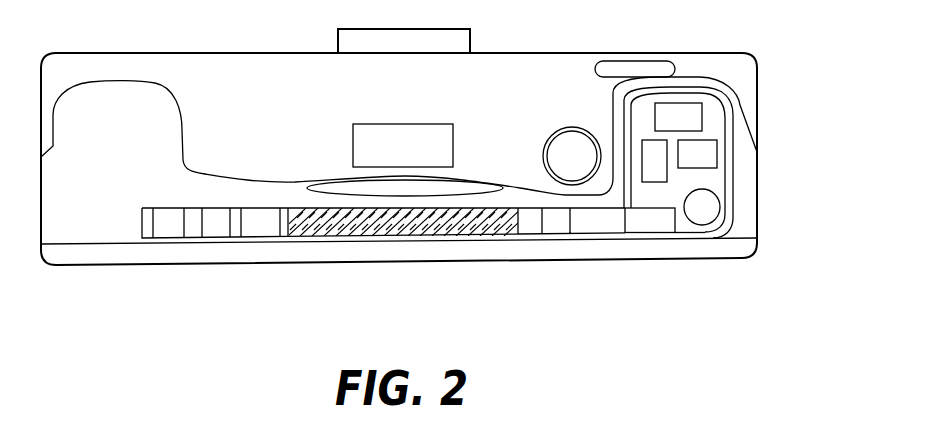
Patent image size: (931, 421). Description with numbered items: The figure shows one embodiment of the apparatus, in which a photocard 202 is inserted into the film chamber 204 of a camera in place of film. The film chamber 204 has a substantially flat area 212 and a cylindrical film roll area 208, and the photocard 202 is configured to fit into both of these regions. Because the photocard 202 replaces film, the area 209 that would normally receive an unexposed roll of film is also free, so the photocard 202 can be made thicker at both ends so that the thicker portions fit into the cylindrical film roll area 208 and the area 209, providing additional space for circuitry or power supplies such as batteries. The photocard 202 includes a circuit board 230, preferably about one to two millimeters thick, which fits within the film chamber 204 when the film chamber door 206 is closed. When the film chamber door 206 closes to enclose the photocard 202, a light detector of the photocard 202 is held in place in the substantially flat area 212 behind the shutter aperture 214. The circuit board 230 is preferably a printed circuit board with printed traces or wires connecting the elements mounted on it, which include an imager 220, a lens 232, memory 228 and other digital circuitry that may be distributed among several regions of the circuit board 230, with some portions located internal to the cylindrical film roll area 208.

The photocard 202 is at (728, 205).
The film chamber 204 is at (210, 197).
The film chamber door 206 is at (317, 253).
The cylindrical film roll area 208 is at (741, 230).
The area for receiving an unexposed roll of film 209 is at (112, 82).
The substantially flat area 212 is at (515, 193).
The shutter aperture 214 is at (424, 157).
The imager 220 is at (398, 247).
The memory 228 is at (660, 248).
The circuit board 230 is at (598, 214).
The lens 232 is at (323, 180).